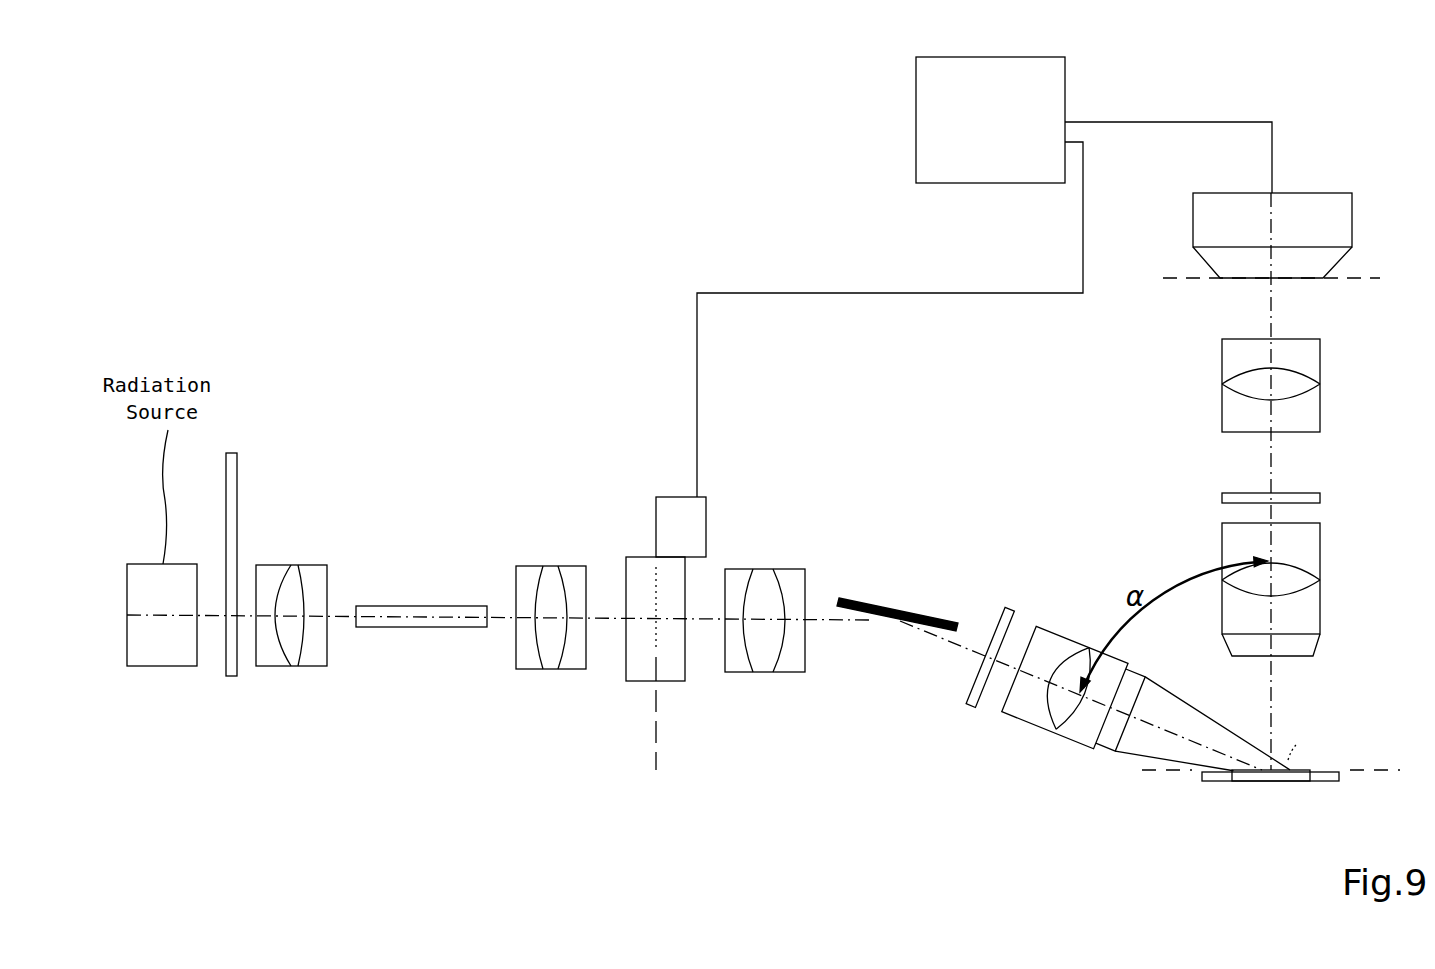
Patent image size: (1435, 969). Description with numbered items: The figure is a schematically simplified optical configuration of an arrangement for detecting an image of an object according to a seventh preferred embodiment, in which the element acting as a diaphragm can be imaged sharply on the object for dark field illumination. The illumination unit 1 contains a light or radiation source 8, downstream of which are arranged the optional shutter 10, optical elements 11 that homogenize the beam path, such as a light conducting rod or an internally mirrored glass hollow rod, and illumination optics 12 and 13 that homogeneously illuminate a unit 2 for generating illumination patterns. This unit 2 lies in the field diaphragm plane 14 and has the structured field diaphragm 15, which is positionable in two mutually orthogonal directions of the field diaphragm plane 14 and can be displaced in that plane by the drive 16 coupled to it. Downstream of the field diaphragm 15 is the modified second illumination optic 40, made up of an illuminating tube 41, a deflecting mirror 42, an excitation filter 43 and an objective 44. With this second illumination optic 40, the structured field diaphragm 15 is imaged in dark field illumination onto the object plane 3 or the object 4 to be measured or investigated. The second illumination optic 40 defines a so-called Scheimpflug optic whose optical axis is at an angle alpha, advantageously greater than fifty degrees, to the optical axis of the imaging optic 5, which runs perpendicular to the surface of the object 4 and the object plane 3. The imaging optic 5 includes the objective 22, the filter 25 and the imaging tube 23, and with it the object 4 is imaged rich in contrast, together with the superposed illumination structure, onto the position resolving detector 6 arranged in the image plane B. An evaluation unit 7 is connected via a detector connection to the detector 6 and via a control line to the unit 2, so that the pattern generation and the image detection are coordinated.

The illumination unit 1 is at (126, 803).
The unit for generating illumination patterns 2 is at (615, 803).
The object plane 3 is at (1186, 772).
The object 4 is at (1319, 731).
The imaging optic 5 is at (1380, 319).
The position resolving detector 6 is at (1193, 240).
The evaluation unit 7 is at (991, 183).
The radiation source 8 is at (162, 660).
The shutter 10 is at (233, 680).
The optical elements 11 is at (425, 623).
The illumination optic 12 is at (313, 667).
The illumination optic 13 is at (530, 664).
The field diaphragm plane 14 is at (655, 763).
The structured field diaphragm 15 is at (662, 590).
The drive 16 is at (697, 522).
The objective 22 is at (1232, 538).
The imaging tube 23 is at (1232, 407).
The filter 25 is at (1315, 498).
The second illumination optic 40 is at (715, 803).
The illuminating tube 41 is at (790, 670).
The deflecting mirror 42 is at (862, 600).
The excitation filter 43 is at (975, 694).
The objective 44 is at (1032, 717).
The image plane B is at (1352, 278).